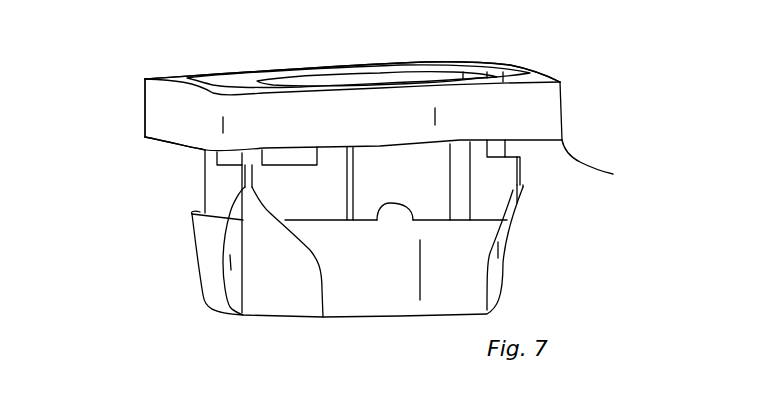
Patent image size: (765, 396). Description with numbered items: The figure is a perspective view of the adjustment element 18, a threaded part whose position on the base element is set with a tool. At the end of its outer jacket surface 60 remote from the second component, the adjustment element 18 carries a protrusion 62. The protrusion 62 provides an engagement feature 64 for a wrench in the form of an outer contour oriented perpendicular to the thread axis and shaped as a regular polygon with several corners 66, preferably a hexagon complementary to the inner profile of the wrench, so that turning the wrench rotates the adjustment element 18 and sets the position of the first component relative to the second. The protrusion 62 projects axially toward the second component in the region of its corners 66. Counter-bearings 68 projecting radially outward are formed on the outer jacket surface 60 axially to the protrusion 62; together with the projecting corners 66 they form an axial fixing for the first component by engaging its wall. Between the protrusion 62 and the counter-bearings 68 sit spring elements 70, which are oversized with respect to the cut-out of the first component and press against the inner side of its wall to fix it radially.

The adjustment element 18 is at (544, 62).
The outer jacket surface 60 is at (273, 290).
The protrusion 62 is at (567, 115).
The engagement feature 64 is at (175, 115).
The corners 66 is at (613, 174).
The counter-bearings 68 is at (200, 212).
The spring elements 70 is at (245, 186).